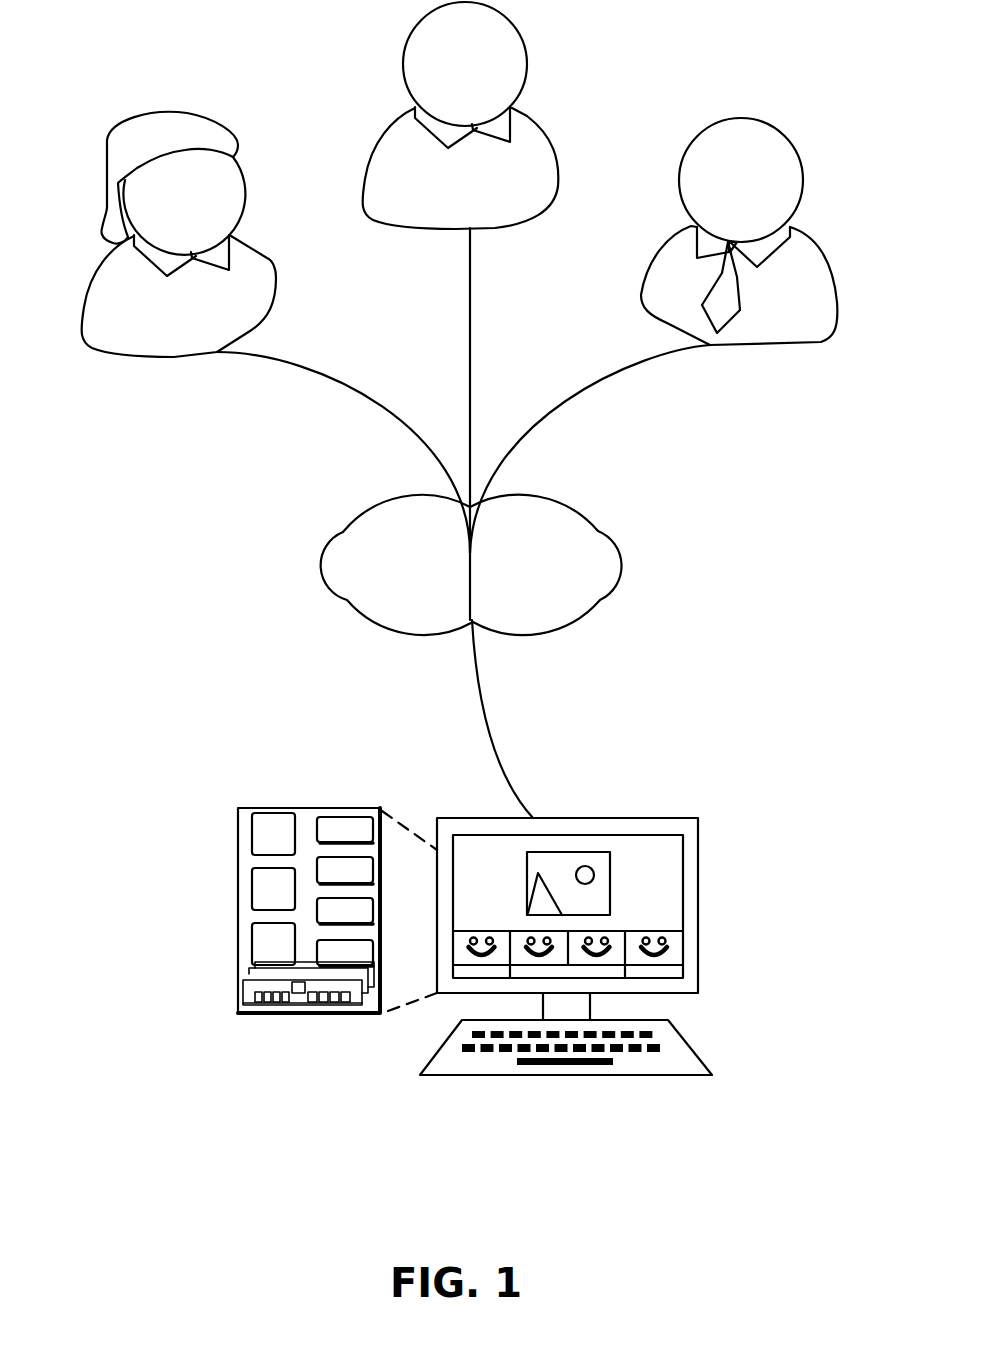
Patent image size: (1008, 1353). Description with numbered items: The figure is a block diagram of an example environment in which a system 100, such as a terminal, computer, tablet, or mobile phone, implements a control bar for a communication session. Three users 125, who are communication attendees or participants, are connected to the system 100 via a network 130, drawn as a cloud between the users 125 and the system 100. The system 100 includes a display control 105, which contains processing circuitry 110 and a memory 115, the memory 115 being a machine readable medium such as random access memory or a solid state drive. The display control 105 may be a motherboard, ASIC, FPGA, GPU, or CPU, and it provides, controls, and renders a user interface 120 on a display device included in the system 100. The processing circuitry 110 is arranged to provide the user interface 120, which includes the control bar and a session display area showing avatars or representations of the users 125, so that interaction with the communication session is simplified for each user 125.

The system 100 is at (599, 922).
The display control 105 is at (268, 896).
The processing circuitry 110 is at (252, 888).
The memory 115 is at (245, 987).
The user interface 120 is at (683, 895).
The users 125 is at (170, 109).
The network 130 is at (297, 560).